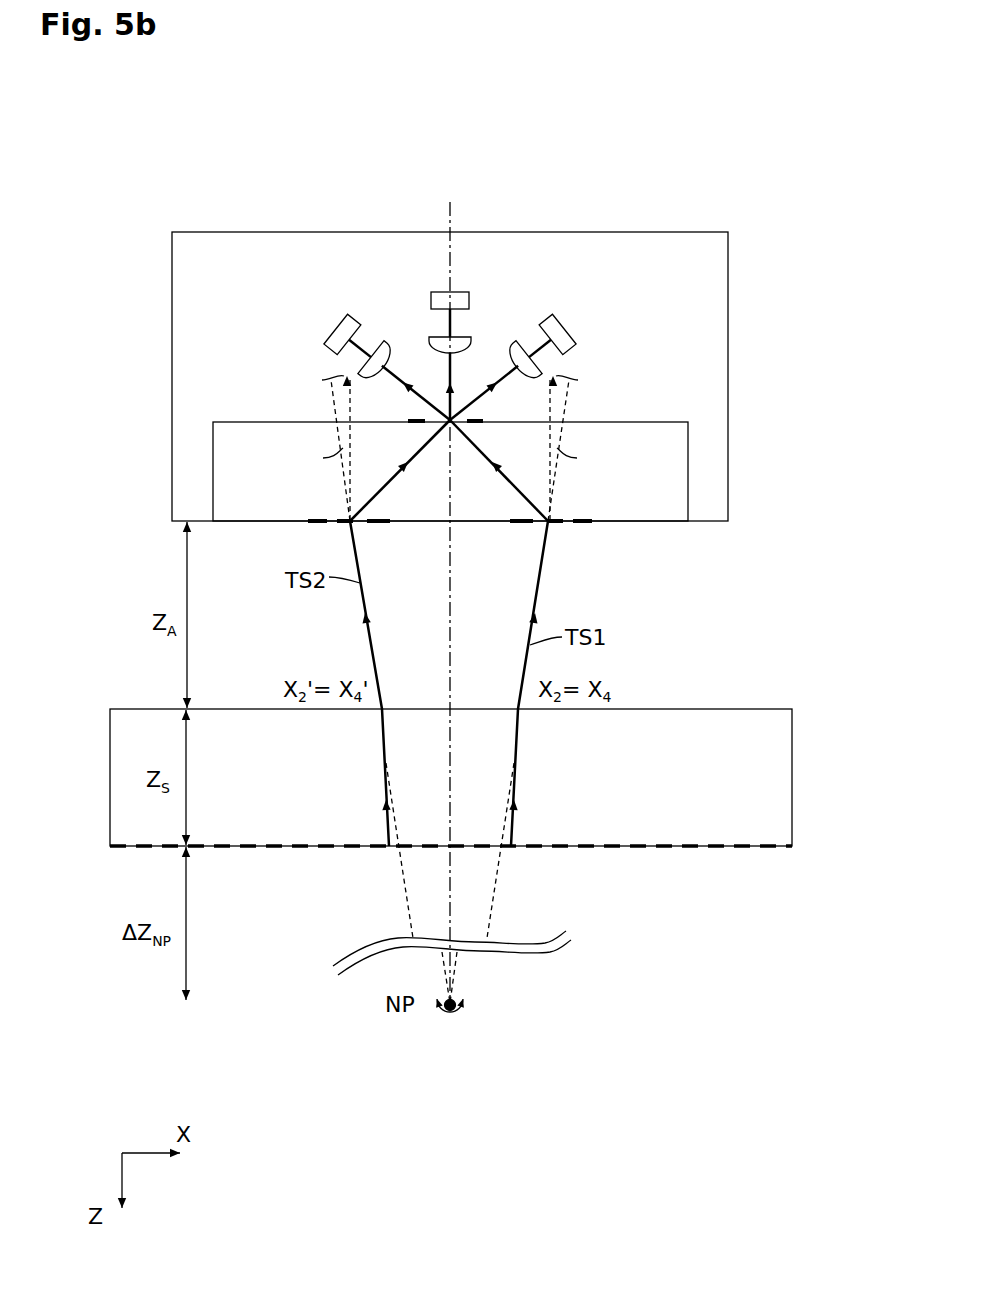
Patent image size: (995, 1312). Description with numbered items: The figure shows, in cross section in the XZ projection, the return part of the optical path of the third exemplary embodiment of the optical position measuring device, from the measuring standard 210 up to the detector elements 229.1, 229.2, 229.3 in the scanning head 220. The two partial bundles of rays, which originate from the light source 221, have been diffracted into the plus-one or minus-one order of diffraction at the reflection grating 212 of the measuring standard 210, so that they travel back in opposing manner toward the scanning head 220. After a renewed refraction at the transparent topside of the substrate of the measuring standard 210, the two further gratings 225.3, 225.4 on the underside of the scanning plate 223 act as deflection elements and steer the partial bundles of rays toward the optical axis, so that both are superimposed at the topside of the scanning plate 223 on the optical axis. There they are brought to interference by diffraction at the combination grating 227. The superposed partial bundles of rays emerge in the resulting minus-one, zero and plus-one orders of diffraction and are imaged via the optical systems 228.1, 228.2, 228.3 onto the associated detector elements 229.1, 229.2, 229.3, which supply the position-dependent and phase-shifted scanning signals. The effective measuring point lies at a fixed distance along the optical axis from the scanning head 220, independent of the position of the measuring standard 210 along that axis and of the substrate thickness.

The scanning head 220 is at (168, 345).
The scanning plate 223 is at (673, 482).
The combination grating 227 is at (418, 424).
The further grating 225.3 is at (565, 527).
The further grating 225.4 is at (316, 528).
The optical system 228.1 is at (513, 348).
The optical system 228.2 is at (433, 337).
The optical system 228.3 is at (386, 343).
The detector element 229.1 is at (570, 337).
The detector element 229.2 is at (440, 292).
The detector element 229.3 is at (328, 339).
The measuring standard 210 is at (460, 811).
The light source 221 is at (768, 768).
The reflection grating 212 is at (720, 848).